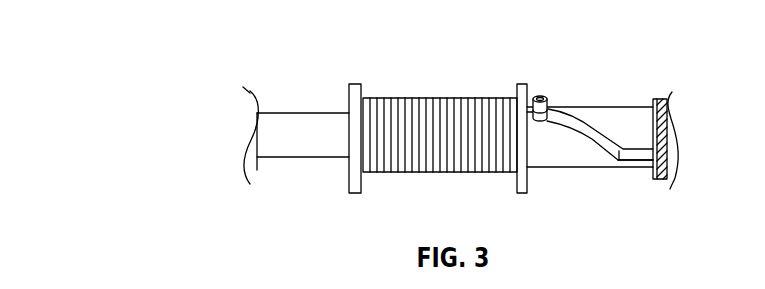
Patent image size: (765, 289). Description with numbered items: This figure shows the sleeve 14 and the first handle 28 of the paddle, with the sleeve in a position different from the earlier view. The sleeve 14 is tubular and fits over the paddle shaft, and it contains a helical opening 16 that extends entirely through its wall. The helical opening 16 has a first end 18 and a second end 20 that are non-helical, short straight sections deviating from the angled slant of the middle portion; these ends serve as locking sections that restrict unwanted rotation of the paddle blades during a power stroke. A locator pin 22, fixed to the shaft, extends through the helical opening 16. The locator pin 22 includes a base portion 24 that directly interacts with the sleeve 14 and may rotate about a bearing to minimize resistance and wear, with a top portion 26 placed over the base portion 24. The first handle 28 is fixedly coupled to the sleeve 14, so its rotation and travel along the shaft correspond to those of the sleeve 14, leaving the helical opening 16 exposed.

The sleeve 14 is at (558, 168).
The helical opening 16 is at (612, 165).
The first end 18 is at (551, 107).
The second end 20 is at (634, 158).
The locator pin 22 is at (537, 94).
The base portion 24 is at (532, 104).
The top portion 26 is at (547, 102).
The first handle 28 is at (437, 172).